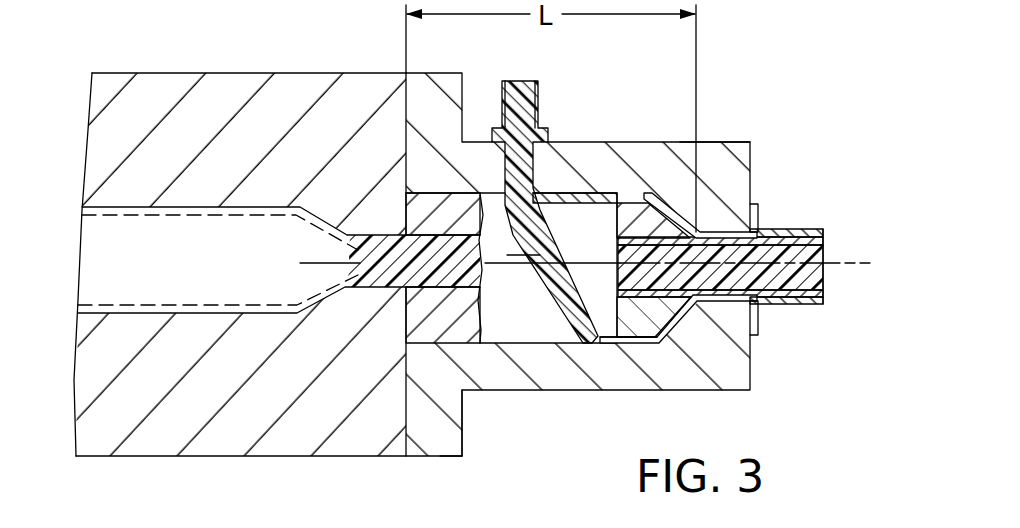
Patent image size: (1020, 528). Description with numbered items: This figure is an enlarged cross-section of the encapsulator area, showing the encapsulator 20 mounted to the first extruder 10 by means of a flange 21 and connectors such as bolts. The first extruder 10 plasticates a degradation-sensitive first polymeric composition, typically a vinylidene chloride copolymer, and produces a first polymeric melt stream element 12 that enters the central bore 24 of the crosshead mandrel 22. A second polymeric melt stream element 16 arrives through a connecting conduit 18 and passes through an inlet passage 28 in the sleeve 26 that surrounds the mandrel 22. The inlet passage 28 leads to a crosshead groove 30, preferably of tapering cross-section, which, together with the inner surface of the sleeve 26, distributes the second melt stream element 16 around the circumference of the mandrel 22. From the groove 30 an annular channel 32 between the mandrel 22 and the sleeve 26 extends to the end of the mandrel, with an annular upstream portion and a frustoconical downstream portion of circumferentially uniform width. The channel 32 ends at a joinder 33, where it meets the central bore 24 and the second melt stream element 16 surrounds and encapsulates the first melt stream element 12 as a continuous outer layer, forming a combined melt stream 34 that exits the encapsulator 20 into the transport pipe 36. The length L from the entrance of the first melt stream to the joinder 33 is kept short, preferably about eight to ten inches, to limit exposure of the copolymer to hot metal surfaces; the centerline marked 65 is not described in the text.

The first extruder 10 is at (237, 70).
The first polymeric melt stream element 12 is at (366, 289).
The second polymeric melt stream element 16 is at (533, 122).
The connecting conduit 18 is at (541, 96).
The encapsulator 20 is at (677, 140).
The flange 21 is at (463, 441).
The crosshead mandrel 22 is at (607, 254).
The central bore 24 is at (696, 300).
The sleeve 26 is at (539, 392).
The inlet passage 28 is at (494, 137).
The crosshead groove 30 is at (541, 254).
The annular channel 32 is at (622, 200).
The joinder 33 is at (702, 308).
The combined melt stream 34 is at (786, 228).
The transport pipe 36 is at (804, 306).
The axis 65 is at (858, 268).